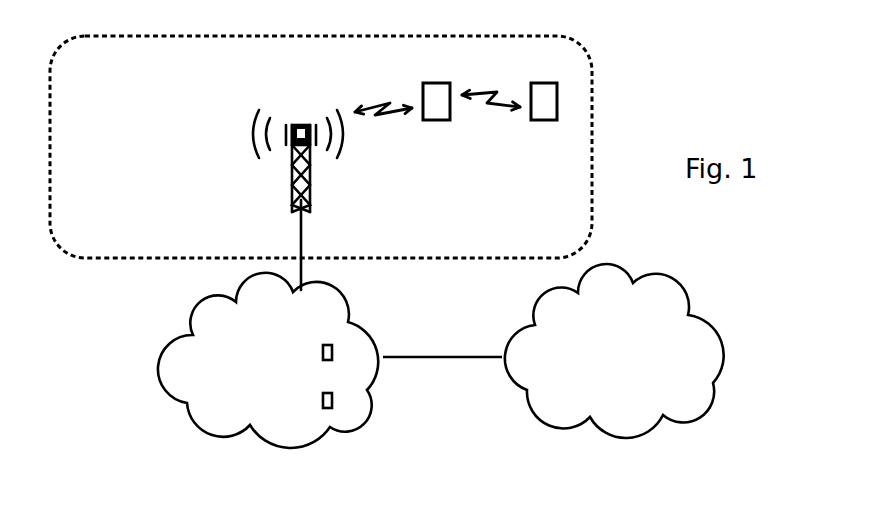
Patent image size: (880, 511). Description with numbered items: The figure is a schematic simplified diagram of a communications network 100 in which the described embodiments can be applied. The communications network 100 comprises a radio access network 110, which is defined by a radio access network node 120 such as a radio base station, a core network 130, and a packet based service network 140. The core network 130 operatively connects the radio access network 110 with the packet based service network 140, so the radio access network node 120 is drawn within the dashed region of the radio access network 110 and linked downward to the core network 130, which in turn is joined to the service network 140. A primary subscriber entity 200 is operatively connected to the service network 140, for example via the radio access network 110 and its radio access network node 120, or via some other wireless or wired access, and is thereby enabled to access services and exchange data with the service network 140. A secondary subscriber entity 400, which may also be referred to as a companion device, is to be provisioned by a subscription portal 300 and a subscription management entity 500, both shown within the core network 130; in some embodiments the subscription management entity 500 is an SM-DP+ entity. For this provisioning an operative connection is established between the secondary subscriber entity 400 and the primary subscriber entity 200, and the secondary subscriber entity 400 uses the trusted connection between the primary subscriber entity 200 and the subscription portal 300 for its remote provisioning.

The communications network 100 is at (697, 53).
The radio access network 110 is at (135, 80).
The radio access network node 120 is at (292, 196).
The core network 130 is at (239, 341).
The packet based service network 140 is at (590, 324).
The primary subscriber entity 200 is at (430, 120).
The subscription portal 300 is at (327, 345).
The secondary subscriber entity 400 is at (538, 120).
The subscription management entity 500 is at (328, 408).